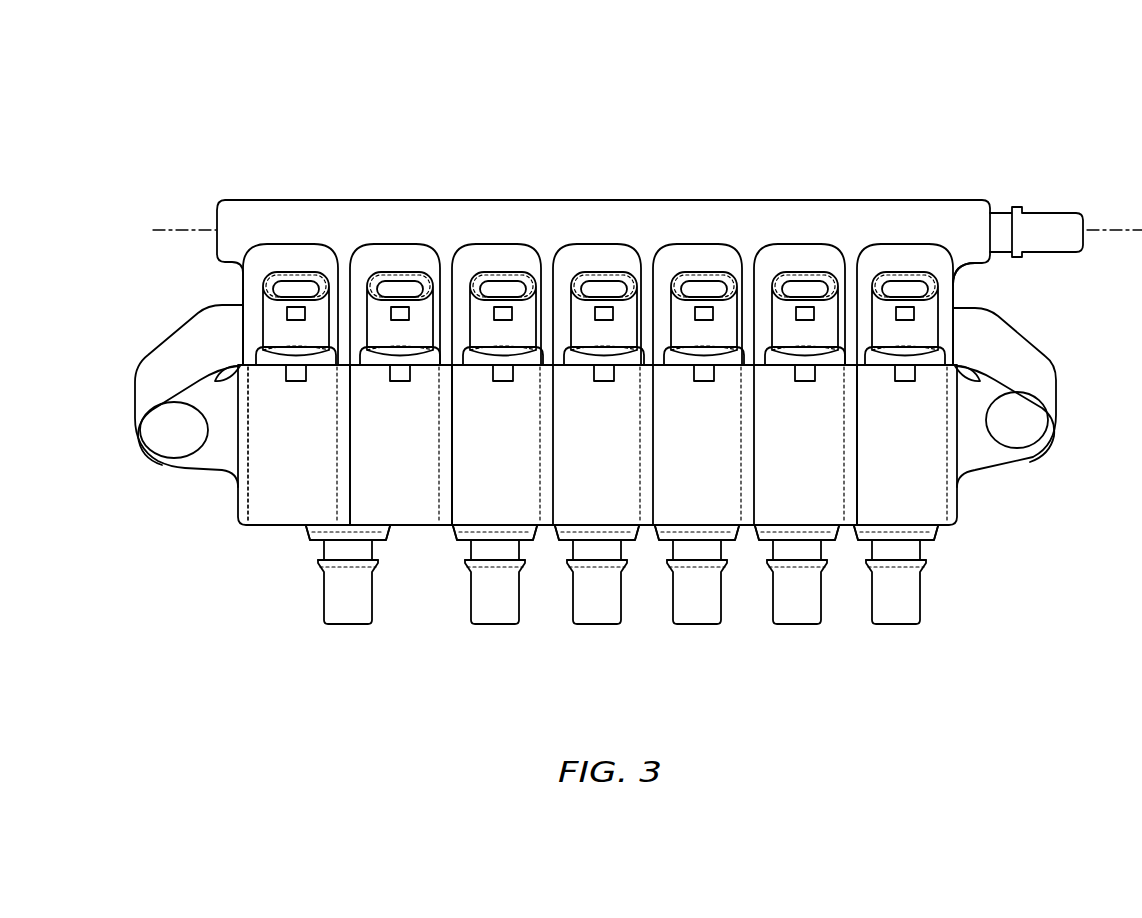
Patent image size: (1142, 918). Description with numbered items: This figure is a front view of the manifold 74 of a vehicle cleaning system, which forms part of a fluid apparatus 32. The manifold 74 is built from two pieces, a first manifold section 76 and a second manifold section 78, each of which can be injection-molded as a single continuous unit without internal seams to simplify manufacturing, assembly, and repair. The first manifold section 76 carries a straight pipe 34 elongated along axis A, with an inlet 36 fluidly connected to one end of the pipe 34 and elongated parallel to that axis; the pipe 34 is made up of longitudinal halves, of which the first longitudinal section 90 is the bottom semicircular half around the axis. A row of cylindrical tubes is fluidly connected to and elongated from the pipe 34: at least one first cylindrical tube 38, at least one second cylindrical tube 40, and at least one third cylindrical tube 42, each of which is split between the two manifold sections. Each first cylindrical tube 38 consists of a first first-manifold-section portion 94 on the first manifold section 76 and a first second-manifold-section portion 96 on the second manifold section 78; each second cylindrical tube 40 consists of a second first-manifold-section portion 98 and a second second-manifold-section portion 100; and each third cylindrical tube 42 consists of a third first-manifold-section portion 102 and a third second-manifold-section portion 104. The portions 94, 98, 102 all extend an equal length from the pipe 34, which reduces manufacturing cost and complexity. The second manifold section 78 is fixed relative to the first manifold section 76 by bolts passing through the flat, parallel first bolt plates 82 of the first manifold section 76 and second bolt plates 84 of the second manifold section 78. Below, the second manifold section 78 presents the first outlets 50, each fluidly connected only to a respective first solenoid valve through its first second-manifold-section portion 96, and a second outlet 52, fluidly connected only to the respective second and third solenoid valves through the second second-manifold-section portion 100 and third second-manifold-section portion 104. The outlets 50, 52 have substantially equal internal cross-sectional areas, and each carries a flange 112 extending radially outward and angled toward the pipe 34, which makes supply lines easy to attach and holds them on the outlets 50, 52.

The fluid apparatus 32 is at (823, 116).
The straight pipe 34 is at (443, 220).
The inlet 36 is at (1057, 212).
The first cylindrical tube 38 is at (502, 497).
The second cylindrical tube 40 is at (395, 497).
The third cylindrical tube 42 is at (292, 497).
The first outlet 50 is at (497, 626).
The second outlet 52 is at (350, 626).
The manifold 74 is at (243, 195).
The first manifold section 76 is at (240, 290).
The second manifold section 78 is at (237, 510).
The first bolt plate 82 is at (165, 340).
The second bolt plate 84 is at (170, 460).
The first longitudinal section 90 is at (973, 272).
The first first-manifold-section portion 94 is at (501, 258).
The first second-manifold-section portion 96 is at (502, 455).
The second first-manifold-section portion 98 is at (400, 258).
The second second-manifold-section portion 100 is at (400, 455).
The third first-manifold-section portion 102 is at (295, 258).
The third second-manifold-section portion 104 is at (300, 455).
The flange 112 is at (373, 565).